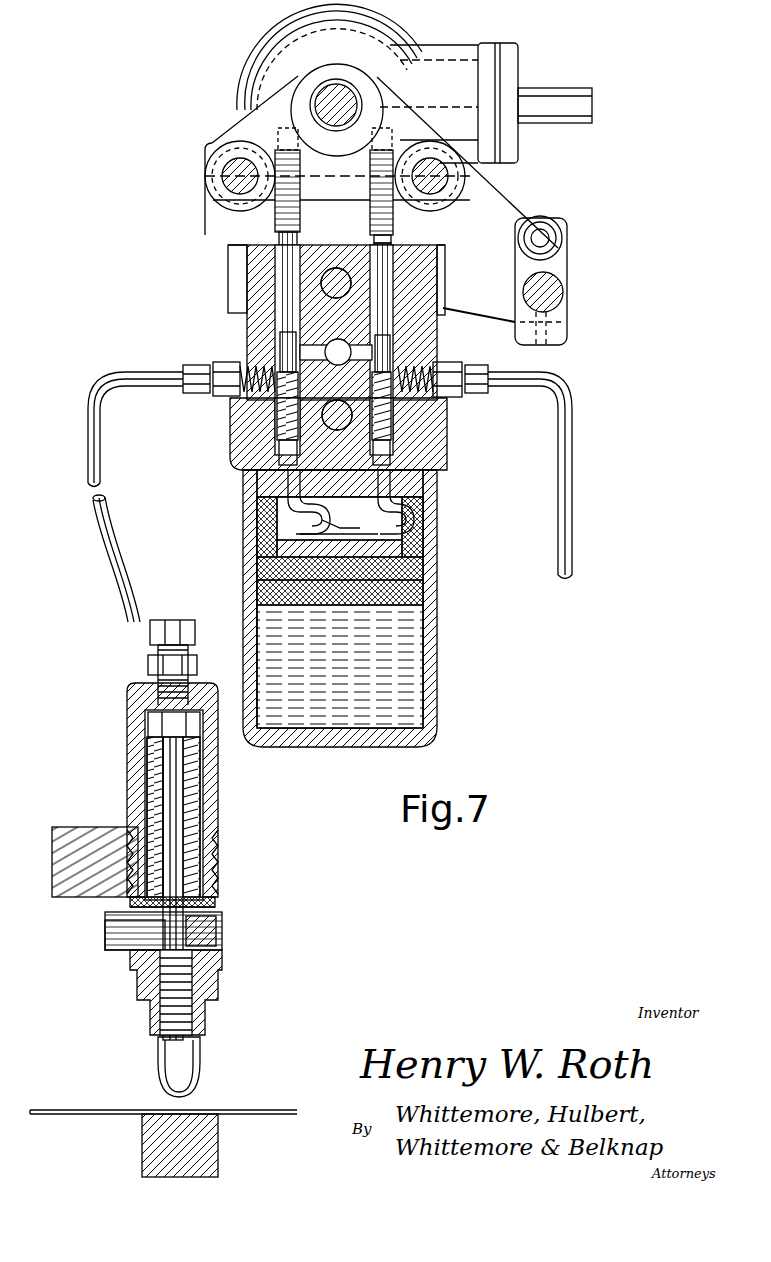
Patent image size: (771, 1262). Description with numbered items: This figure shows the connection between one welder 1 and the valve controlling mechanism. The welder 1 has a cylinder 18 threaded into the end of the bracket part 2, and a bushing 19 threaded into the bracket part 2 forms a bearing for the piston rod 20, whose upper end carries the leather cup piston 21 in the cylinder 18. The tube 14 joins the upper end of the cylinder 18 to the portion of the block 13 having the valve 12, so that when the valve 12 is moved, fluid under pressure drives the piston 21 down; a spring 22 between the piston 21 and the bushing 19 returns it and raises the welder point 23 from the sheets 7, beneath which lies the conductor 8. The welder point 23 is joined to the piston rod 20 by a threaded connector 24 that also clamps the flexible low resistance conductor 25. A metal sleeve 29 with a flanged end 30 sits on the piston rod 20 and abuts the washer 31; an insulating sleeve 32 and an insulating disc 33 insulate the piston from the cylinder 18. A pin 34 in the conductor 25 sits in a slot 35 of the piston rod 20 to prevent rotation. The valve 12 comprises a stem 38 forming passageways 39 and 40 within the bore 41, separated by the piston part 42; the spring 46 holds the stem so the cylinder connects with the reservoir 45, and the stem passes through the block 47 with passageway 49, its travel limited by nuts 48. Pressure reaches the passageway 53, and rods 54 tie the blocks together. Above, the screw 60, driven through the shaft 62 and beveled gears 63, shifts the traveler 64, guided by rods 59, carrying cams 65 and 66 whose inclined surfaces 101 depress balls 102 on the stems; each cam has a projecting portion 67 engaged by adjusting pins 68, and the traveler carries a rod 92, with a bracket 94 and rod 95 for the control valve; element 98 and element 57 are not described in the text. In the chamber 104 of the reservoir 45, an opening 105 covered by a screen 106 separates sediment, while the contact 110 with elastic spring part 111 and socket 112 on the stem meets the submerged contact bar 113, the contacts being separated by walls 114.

The welder 1 is at (212, 800).
The bracket part 2 is at (88, 838).
The sheets 7 is at (59, 1110).
The conductor 8 is at (206, 1151).
The valve 12 is at (290, 282).
The block 13 is at (245, 317).
The tube 14 is at (140, 533).
The cylinder 18 is at (148, 738).
The bushing 19 is at (206, 880).
The piston rod 20 is at (176, 857).
The leather cup piston 21 is at (200, 742).
The spring 22 is at (198, 770).
The welder point 23 is at (166, 1068).
The threaded connector 24 is at (210, 989).
The flexible low resistance conductor 25 is at (118, 946).
The metal sleeve 29 is at (196, 830).
The flanged end 30 is at (148, 758).
The washer 31 is at (130, 915).
The insulating sleeve 32 is at (196, 842).
The insulating disc 33 is at (130, 926).
The pin 34 is at (214, 940).
The slot 35 is at (206, 918).
The stem 38 is at (262, 264).
The passageway 39 is at (275, 352).
The passageway 40 is at (278, 418).
The bore 41 is at (272, 262).
The piston part 42 is at (276, 400).
The reservoir 45 is at (434, 668).
The spring 46 is at (280, 436).
The block 47 is at (280, 452).
The nuts 48 is at (290, 486).
The passageway 49 is at (228, 462).
The passageway 53 is at (400, 338).
The rods 54 is at (338, 268).
The ball valve 57 is at (404, 352).
The rods 59 is at (230, 170).
The screw 60 is at (326, 105).
The shaft 62 is at (549, 100).
The beveled gears 63 is at (372, 50).
The traveler 64 is at (392, 104).
The cam 65 is at (388, 221).
The cam 66 is at (296, 170).
The projecting portion 67 is at (390, 154).
The adjusting pins 68 is at (280, 142).
The rod 92 is at (547, 239).
The bracket 94 is at (560, 334).
The rod 95 is at (560, 291).
The link 98 is at (492, 318).
The inclined surface 101 is at (292, 205).
The ball 102 is at (383, 236).
The chamber 104 is at (406, 641).
The opening 105 is at (424, 590).
The screen 106 is at (420, 576).
The contact 110 is at (365, 522).
The elastic spring part 111 is at (372, 532).
The socket 112 is at (302, 498).
The contact bar 113 is at (402, 548).
The walls 114 is at (430, 480).